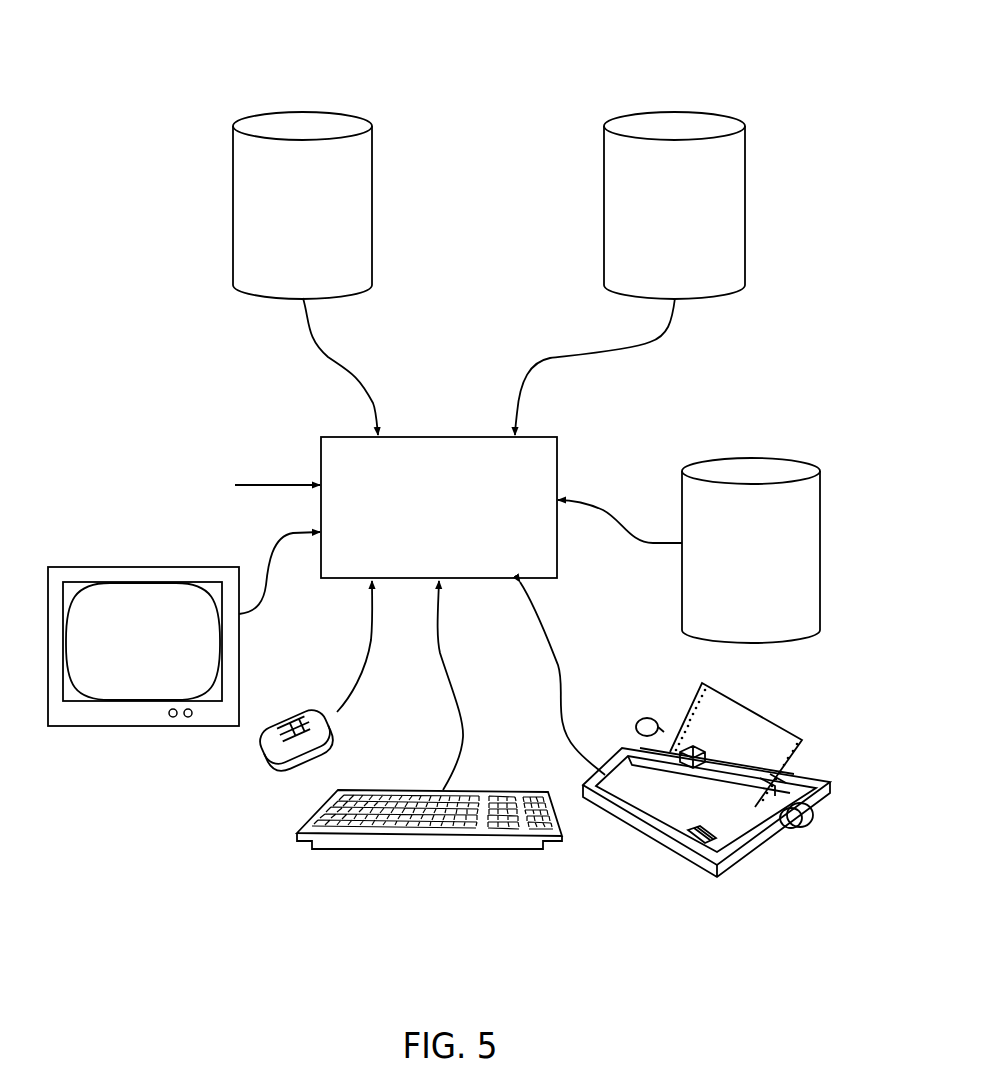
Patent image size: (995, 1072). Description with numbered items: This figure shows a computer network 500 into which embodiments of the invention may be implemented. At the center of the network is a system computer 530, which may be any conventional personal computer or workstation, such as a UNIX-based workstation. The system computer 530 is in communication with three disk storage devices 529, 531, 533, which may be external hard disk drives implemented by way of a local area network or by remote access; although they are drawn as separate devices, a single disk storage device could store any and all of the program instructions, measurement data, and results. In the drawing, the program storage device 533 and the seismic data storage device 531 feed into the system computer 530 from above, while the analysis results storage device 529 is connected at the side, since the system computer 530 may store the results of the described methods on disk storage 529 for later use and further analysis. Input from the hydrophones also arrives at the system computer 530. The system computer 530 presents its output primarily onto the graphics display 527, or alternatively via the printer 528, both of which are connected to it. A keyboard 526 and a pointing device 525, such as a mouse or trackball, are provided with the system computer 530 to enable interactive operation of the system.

The computer network 500 is at (232, 33).
The pointing device 525 is at (265, 762).
The keyboard 526 is at (437, 850).
The graphics display 527 is at (117, 726).
The printer 528 is at (778, 843).
The disk storage device 529 is at (753, 458).
The system computer 530 is at (434, 436).
The disk storage device 531 is at (674, 111).
The disk storage device 533 is at (302, 111).